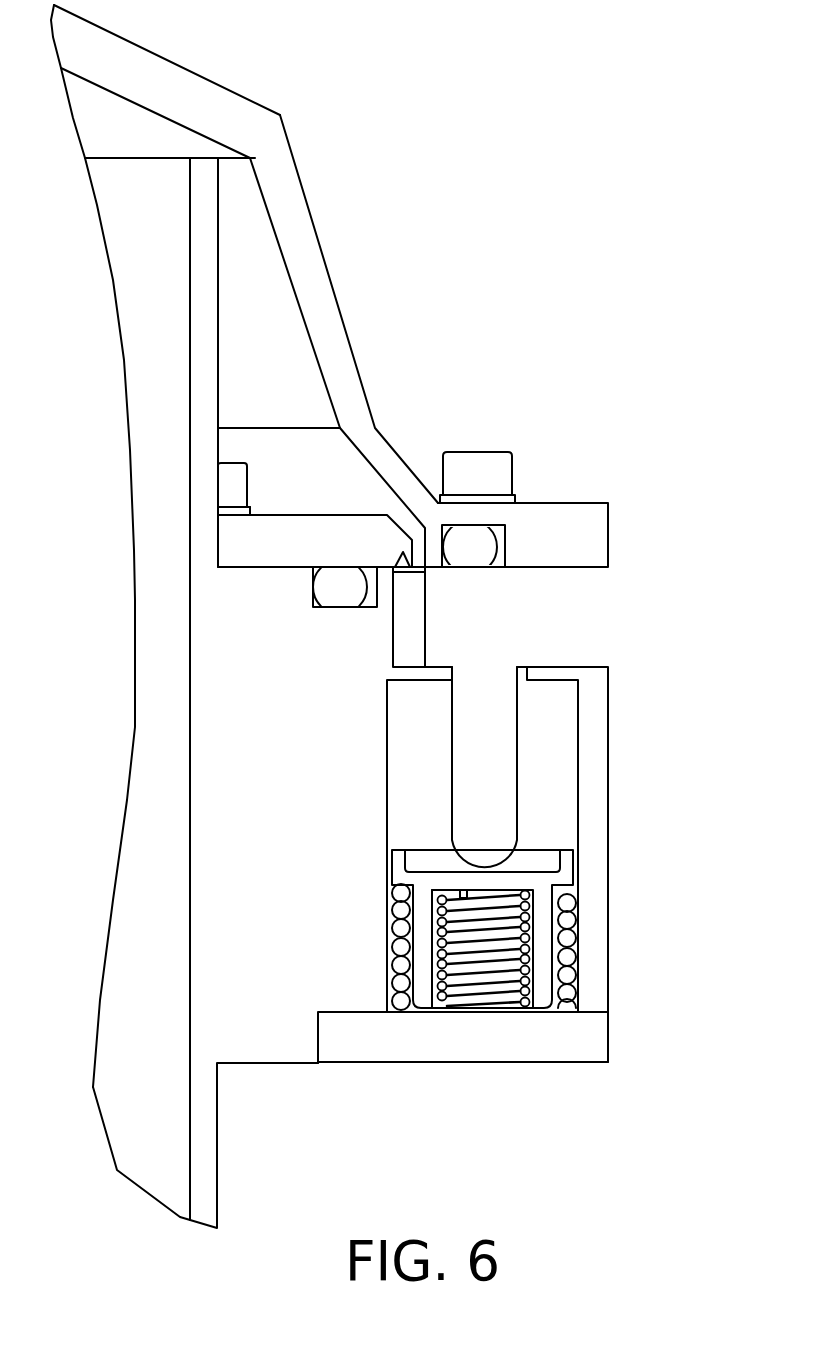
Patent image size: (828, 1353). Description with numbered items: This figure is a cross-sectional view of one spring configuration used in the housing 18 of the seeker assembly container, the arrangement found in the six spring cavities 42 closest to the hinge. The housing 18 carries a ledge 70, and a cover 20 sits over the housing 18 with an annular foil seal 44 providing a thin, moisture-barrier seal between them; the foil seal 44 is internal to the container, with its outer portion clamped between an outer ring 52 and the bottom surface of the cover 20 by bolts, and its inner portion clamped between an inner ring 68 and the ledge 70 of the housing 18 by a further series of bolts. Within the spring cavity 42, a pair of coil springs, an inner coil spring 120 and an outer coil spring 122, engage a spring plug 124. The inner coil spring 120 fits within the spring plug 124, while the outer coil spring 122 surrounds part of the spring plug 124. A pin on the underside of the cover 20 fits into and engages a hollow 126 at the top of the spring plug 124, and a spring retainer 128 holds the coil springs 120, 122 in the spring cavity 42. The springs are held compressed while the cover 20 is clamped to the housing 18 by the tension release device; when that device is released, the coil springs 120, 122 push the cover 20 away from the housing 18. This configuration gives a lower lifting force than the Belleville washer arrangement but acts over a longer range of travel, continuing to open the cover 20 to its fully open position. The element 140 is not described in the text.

The housing 18 is at (209, 1127).
The cover 20 is at (303, 245).
The spring cavity 42 is at (557, 763).
The annular foil seal 44 is at (559, 563).
The outer ring 52 is at (569, 619).
The inner ring 68 is at (283, 530).
The ledge 70 is at (227, 717).
The inner coil spring 120 is at (520, 908).
The outer coil spring 122 is at (567, 932).
The spring plug 124 is at (565, 875).
The hollow 126 is at (535, 851).
The spring retainer 128 is at (480, 1045).
The plunger 140 is at (490, 755).